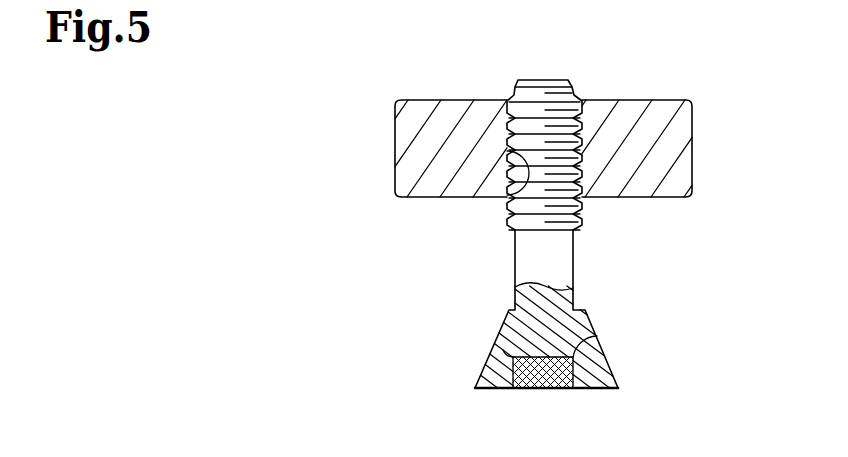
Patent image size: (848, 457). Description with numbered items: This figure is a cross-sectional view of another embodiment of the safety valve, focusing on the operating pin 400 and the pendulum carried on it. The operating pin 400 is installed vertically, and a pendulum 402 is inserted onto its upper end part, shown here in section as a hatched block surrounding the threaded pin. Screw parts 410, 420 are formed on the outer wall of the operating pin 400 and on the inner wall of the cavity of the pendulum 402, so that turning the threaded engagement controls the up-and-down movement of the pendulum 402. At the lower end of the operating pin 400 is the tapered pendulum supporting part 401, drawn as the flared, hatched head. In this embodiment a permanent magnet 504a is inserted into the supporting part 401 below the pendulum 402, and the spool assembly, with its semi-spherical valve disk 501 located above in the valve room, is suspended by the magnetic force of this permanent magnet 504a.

The operating pin 400 is at (574, 263).
The tapered pendulum supporting part 401 is at (503, 350).
The pendulum 402 is at (395, 148).
The screw part 410 is at (510, 232).
The screw part 420 is at (510, 202).
The permanent magnet 504a is at (598, 338).
The semi-spherical valve disk 501 is at (478, 4).